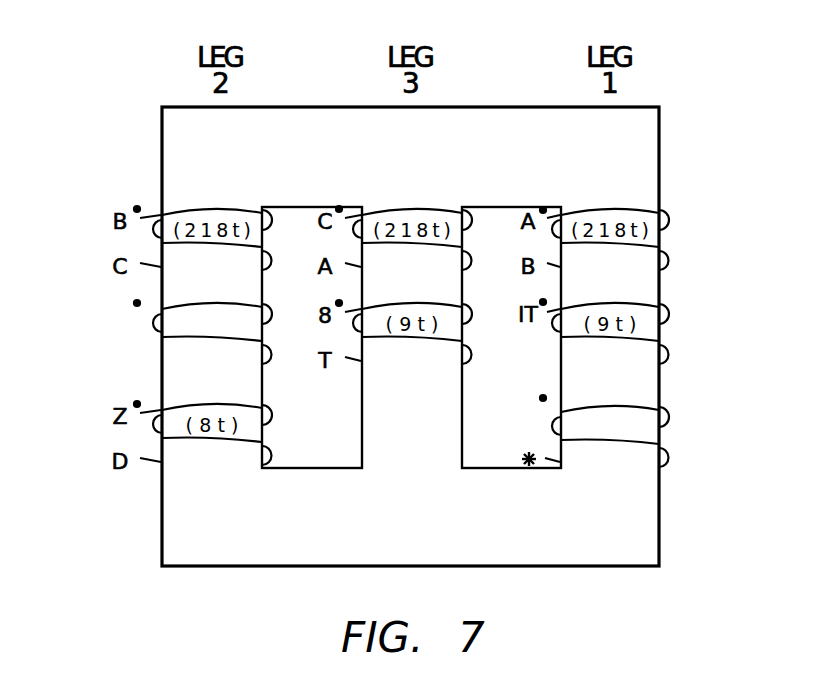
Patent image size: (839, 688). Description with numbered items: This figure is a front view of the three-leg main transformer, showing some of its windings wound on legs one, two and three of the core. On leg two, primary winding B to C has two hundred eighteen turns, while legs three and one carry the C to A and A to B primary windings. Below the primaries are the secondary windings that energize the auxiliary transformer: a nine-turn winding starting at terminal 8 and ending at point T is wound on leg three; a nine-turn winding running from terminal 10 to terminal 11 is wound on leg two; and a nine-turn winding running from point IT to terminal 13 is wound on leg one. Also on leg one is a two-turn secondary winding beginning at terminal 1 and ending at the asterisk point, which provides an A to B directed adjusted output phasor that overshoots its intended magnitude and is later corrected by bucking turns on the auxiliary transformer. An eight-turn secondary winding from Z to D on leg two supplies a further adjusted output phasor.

The secondary winding terminal 8 is at (702, 167).
The secondary winding terminal 10 is at (161, 309).
The secondary winding terminal 11 is at (161, 361).
The secondary winding terminal 13 is at (560, 362).
The secondary winding terminal 1 is at (560, 411).